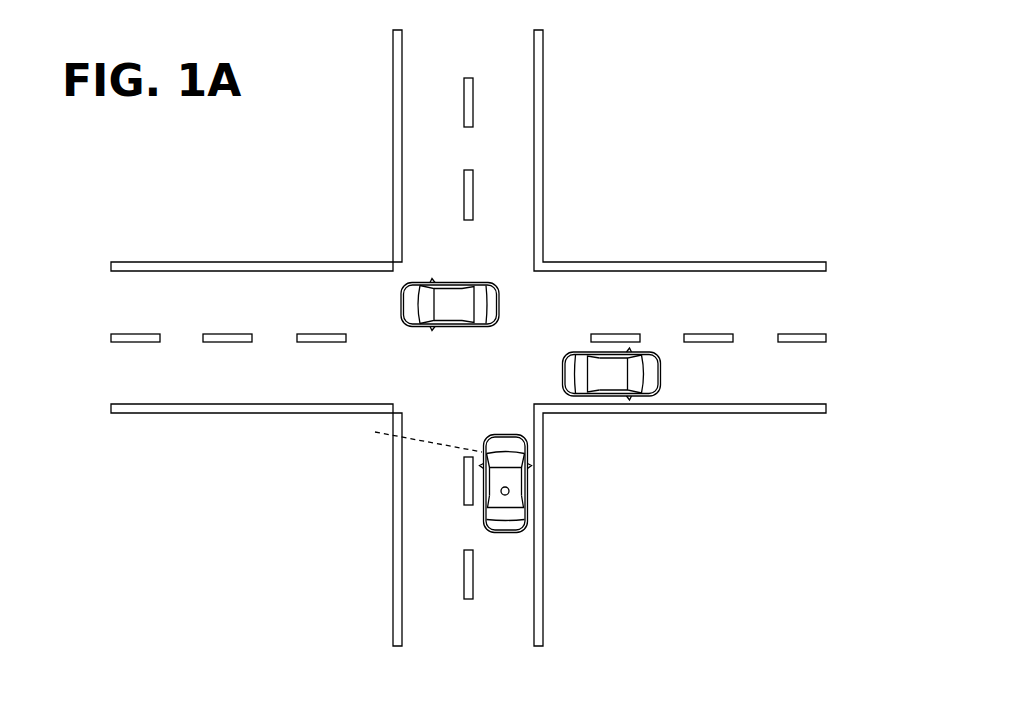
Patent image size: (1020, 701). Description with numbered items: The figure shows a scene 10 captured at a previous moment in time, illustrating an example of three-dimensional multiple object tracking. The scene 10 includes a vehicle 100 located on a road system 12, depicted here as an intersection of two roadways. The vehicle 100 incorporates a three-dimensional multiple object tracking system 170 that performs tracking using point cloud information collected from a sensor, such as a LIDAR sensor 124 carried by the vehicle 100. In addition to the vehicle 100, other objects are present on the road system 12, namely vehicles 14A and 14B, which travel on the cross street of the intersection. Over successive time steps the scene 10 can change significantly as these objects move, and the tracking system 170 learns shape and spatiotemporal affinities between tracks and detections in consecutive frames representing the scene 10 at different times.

The scene 10 is at (664, 80).
The road system 12 is at (500, 211).
The vehicle 14A is at (408, 303).
The vehicle 14B is at (654, 373).
The vehicle 100 is at (526, 490).
The LIDAR sensor 124 is at (509, 494).
The 3D MOT system 170 is at (407, 437).